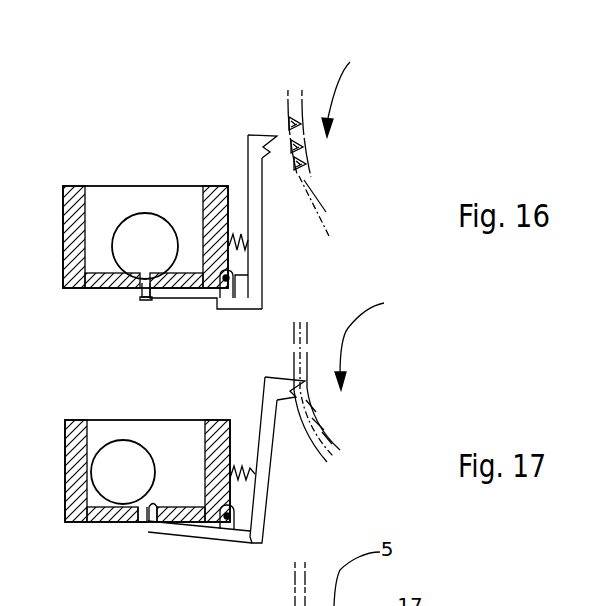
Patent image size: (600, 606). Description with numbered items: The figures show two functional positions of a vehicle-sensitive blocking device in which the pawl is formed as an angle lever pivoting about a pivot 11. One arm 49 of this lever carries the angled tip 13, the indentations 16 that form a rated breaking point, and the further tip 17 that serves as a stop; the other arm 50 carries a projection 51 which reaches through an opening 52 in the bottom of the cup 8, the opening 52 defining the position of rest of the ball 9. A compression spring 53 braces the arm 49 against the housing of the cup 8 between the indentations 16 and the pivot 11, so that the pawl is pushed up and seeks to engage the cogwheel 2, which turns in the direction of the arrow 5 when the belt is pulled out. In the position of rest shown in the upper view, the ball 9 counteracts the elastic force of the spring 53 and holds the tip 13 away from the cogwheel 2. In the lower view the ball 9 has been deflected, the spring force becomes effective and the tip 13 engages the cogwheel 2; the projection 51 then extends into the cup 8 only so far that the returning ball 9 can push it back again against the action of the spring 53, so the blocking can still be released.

In FIG. 16, the cogwheel 2 is at (318, 211).
In FIG. 17, the cogwheel 2 is at (300, 357).
In FIG. 16, the arrow 5 is at (340, 82).
In FIG. 17, the arrow 5 is at (366, 337).
In FIG. 16, the cup 8 is at (103, 265).
In FIG. 17, the cup 8 is at (96, 499).
In FIG. 16, the ball 9 is at (136, 243).
In FIG. 17, the ball 9 is at (128, 470).
In FIG. 16, the pivot 11 is at (229, 276).
In FIG. 17, the pivot 11 is at (227, 520).
In FIG. 16, the angled tip 13 is at (263, 136).
In FIG. 17, the angled tip 13 is at (293, 390).
In FIG. 16, the indentations 16 is at (252, 158).
In FIG. 17, the indentations 16 is at (280, 400).
In FIG. 16, the further tip 17 is at (313, 185).
In FIG. 17, the further tip 17 is at (292, 403).
In FIG. 16, the arm 49 is at (256, 222).
In FIG. 17, the arm 49 is at (262, 500).
In FIG. 16, the other arm 50 is at (205, 300).
In FIG. 17, the other arm 50 is at (192, 538).
In FIG. 16, the projection 51 is at (150, 310).
In FIG. 17, the projection 51 is at (153, 514).
In FIG. 16, the opening 52 is at (141, 284).
In FIG. 17, the opening 52 is at (145, 517).
In FIG. 16, the compression spring 53 is at (232, 232).
In FIG. 17, the compression spring 53 is at (258, 466).